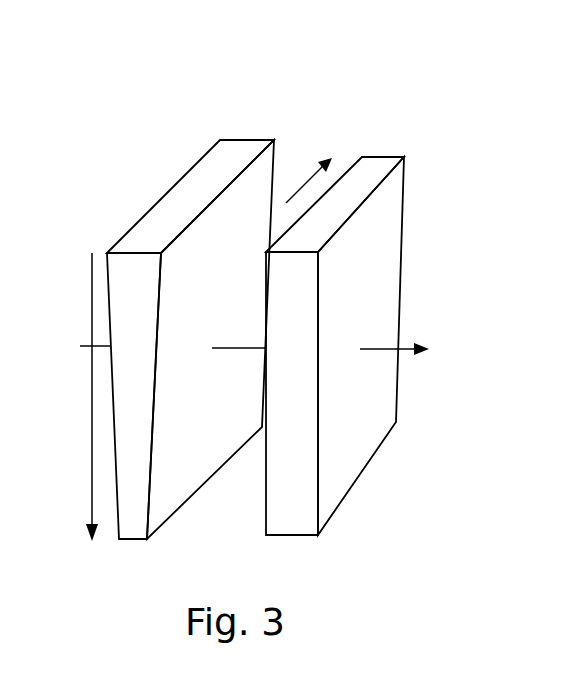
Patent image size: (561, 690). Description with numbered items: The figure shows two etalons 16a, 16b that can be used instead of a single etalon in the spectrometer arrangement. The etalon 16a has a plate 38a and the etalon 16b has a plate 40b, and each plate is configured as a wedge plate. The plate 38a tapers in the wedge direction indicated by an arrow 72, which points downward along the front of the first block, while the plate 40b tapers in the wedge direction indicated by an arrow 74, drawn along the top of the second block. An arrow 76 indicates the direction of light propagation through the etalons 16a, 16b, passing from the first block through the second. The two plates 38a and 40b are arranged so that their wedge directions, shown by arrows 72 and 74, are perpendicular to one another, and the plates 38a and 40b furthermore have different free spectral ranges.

The etalon 16a is at (185, 276).
The etalon 16b is at (369, 274).
The plate 38a is at (158, 228).
The plate 40b is at (371, 162).
The arrow 72 is at (92, 465).
The arrow 74 is at (311, 178).
The arrow 76 is at (405, 345).